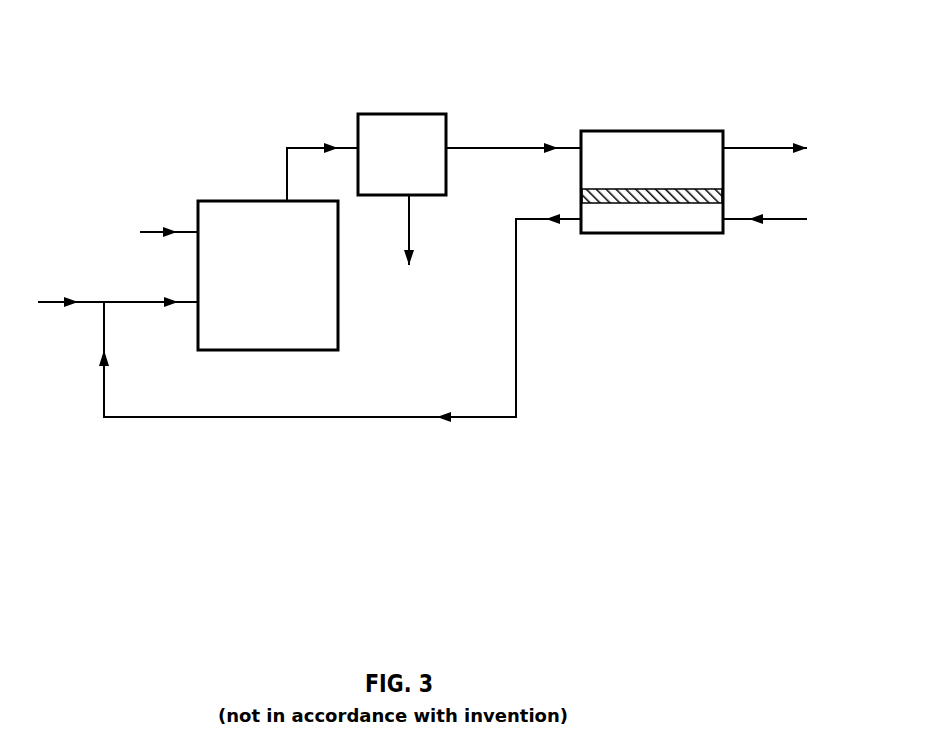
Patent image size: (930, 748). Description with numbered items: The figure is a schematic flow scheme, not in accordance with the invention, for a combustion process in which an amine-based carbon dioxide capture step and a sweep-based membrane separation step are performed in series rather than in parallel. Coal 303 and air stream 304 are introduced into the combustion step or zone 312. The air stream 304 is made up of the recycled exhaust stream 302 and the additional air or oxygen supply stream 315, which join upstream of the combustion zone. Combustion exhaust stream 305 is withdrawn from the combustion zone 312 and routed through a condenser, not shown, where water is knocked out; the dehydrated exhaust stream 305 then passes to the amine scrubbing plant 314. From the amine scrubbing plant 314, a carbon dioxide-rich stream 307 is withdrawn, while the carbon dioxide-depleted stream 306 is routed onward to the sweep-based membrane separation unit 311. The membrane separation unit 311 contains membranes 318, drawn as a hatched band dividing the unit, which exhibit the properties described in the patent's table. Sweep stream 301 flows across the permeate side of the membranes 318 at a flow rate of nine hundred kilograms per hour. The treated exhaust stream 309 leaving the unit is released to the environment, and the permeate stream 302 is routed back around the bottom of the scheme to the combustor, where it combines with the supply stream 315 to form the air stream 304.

The sweep stream 301 is at (785, 218).
The recycled exhaust stream 302 is at (340, 327).
The coal 303 is at (147, 231).
The air stream 304 is at (151, 292).
The combustion exhaust stream 305 is at (320, 163).
The carbon dioxide-depleted stream 306 is at (513, 138).
The carbon dioxide-rich stream 307 is at (411, 243).
The exhaust stream 309 is at (785, 147).
The membrane separation unit 311 is at (698, 131).
The combustion step or zone 312 is at (230, 201).
The amine scrubbing plant 314 is at (408, 114).
The additional air or oxygen supply stream 315 is at (61, 292).
The membranes 318 is at (723, 190).